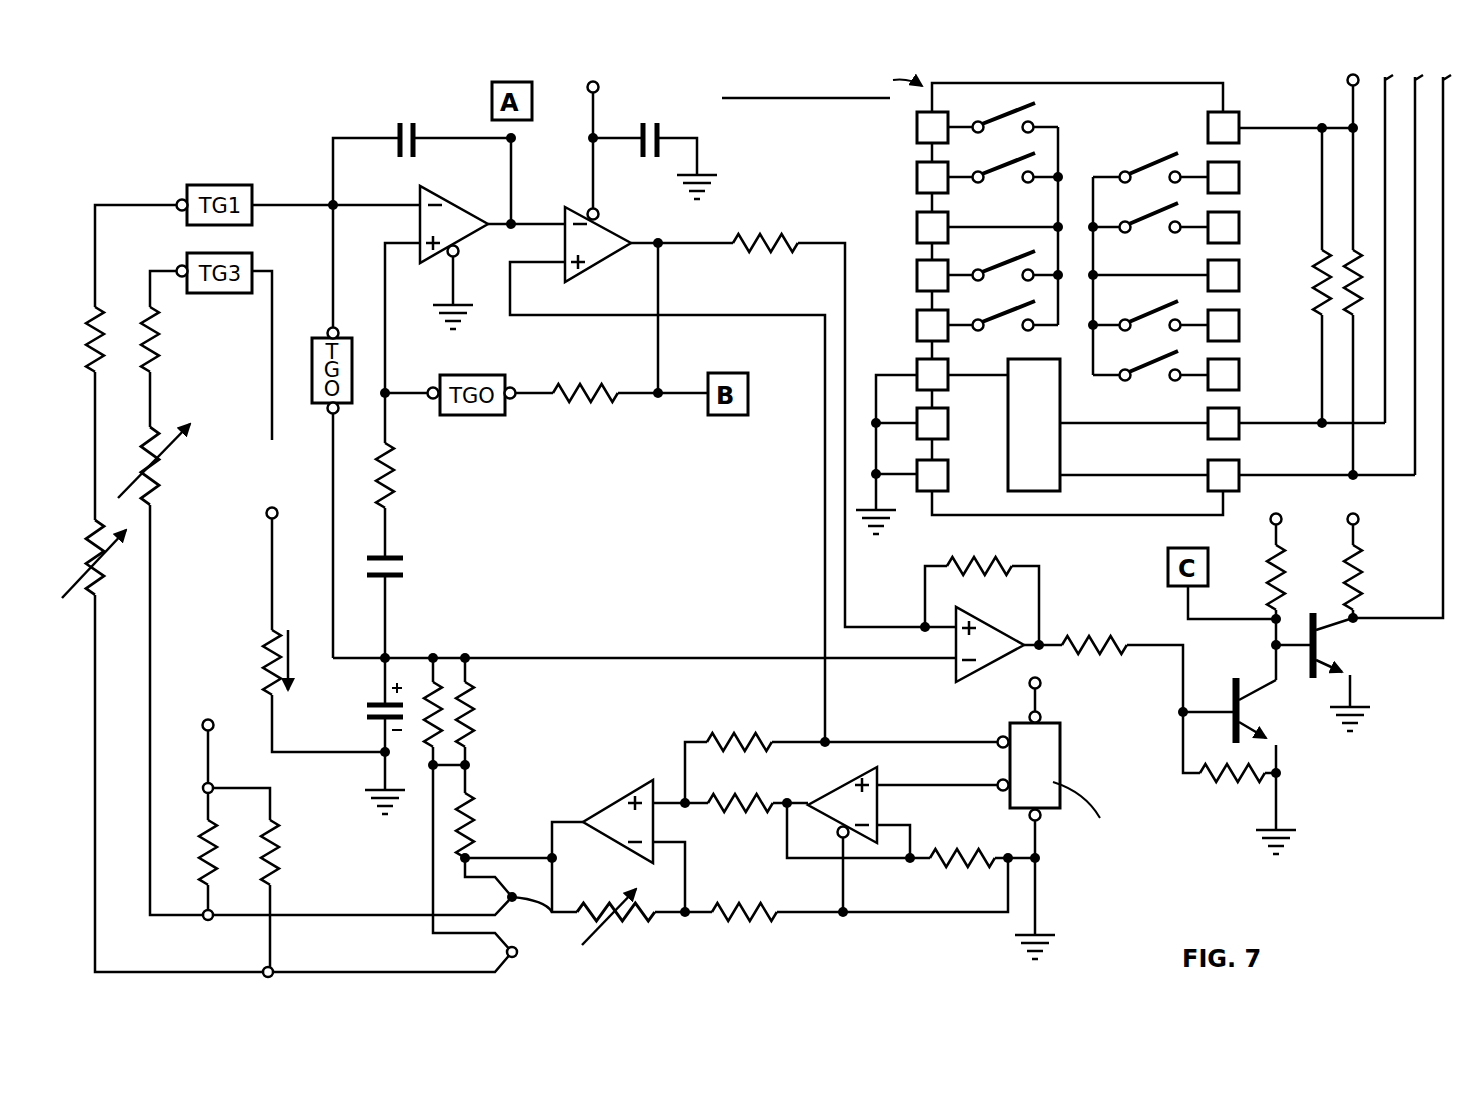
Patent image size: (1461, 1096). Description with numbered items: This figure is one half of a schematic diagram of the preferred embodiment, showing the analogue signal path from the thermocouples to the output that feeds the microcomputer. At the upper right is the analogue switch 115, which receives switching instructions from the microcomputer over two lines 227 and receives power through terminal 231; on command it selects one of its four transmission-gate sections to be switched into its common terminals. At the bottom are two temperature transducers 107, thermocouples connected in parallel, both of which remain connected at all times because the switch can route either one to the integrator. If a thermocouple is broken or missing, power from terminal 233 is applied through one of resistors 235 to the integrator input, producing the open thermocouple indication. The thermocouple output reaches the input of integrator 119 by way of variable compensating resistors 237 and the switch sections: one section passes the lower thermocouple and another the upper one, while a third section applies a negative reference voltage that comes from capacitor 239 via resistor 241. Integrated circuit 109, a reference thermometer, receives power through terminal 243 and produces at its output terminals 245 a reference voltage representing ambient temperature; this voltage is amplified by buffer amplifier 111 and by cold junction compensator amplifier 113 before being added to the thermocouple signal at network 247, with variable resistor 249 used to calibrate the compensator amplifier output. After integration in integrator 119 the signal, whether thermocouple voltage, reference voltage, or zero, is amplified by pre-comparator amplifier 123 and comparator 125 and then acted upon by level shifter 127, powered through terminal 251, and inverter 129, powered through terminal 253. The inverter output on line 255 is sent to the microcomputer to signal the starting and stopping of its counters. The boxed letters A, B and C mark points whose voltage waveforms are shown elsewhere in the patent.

The temperature transducers 107 is at (517, 954).
The integrated circuit 109 is at (1053, 747).
The buffer amplifier 111 is at (850, 787).
The cold junction compensator amplifier 113 is at (618, 800).
The analogue switch 115 is at (1127, 128).
The integrator 119 is at (447, 213).
The pre-comparator amplifier 123 is at (605, 236).
The comparator 125 is at (985, 636).
The level shifter 127 is at (1232, 692).
The inverter 129 is at (1322, 640).
The lines 227 is at (1415, 130).
The terminal 231 is at (1347, 82).
The terminal 233 is at (208, 718).
The resistors 235 is at (265, 865).
The variable compensating resistors 237 is at (95, 570).
The capacitor 239 is at (365, 705).
The resistor 241 is at (262, 648).
The terminal 243 is at (1045, 683).
The output terminals 245 is at (998, 782).
The network 247 is at (482, 768).
The variable resistor 249 is at (633, 920).
The terminal 251 is at (1281, 514).
The terminal 253 is at (1358, 514).
The line 255 is at (1443, 548).